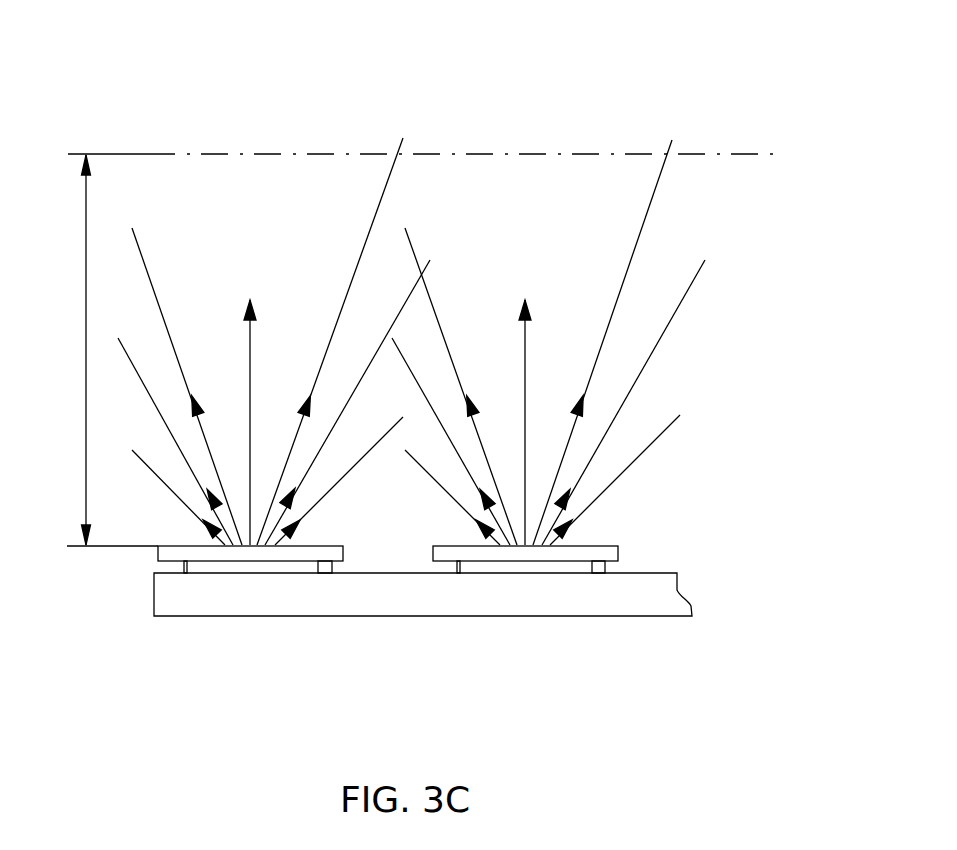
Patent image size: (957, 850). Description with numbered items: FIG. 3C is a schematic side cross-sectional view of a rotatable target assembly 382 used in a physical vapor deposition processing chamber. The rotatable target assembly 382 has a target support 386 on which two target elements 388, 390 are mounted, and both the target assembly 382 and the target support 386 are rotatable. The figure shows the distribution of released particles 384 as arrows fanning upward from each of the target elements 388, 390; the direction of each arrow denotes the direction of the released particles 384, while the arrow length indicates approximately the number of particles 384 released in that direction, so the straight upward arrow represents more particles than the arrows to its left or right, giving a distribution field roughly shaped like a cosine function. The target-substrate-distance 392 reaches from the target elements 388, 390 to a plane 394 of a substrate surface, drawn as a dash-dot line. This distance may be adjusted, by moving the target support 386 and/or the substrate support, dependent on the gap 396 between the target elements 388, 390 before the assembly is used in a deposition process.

The rotatable target assembly 382 is at (165, 94).
The released particles 384 is at (292, 428).
The target support 386 is at (187, 598).
The target element 388 is at (333, 563).
The target element 390 is at (600, 563).
The target-substrate-distance 392 is at (85, 303).
The plane of a substrate surface 394 is at (763, 153).
The gap 396 is at (388, 560).